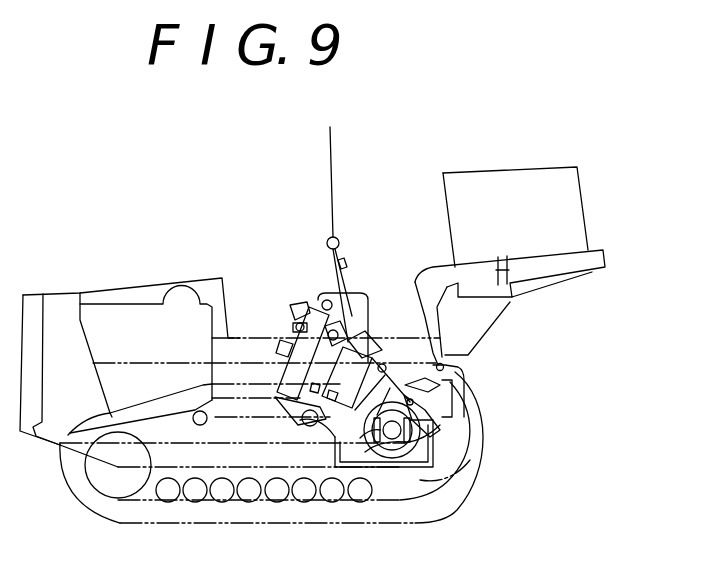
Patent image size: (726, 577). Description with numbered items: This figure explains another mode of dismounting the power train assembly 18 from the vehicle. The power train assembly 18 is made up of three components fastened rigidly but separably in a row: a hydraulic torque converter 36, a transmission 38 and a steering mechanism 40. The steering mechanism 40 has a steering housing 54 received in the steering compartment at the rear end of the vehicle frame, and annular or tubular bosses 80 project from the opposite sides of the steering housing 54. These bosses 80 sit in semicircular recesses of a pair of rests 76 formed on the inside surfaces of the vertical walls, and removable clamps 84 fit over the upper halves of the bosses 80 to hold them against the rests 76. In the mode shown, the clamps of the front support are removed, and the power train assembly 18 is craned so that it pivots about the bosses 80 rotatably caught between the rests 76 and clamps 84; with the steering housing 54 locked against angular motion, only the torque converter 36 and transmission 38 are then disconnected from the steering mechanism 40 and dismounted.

The power train assembly 18 is at (282, 308).
The hydraulic torque converter 36 is at (330, 352).
The transmission 38 is at (363, 373).
The steering mechanism 40 is at (430, 406).
The steering housing 54 is at (410, 427).
The rests 76 is at (413, 423).
The bosses 80 is at (393, 440).
The removable clamps 84 is at (338, 435).